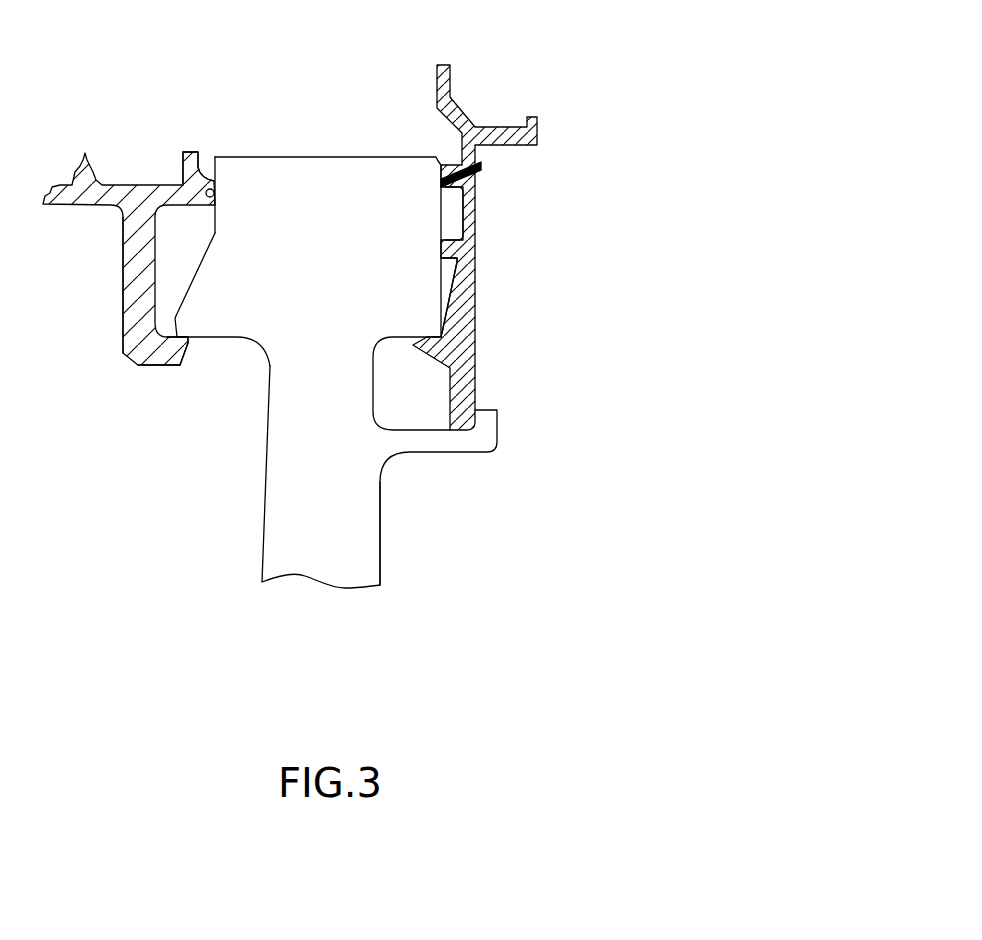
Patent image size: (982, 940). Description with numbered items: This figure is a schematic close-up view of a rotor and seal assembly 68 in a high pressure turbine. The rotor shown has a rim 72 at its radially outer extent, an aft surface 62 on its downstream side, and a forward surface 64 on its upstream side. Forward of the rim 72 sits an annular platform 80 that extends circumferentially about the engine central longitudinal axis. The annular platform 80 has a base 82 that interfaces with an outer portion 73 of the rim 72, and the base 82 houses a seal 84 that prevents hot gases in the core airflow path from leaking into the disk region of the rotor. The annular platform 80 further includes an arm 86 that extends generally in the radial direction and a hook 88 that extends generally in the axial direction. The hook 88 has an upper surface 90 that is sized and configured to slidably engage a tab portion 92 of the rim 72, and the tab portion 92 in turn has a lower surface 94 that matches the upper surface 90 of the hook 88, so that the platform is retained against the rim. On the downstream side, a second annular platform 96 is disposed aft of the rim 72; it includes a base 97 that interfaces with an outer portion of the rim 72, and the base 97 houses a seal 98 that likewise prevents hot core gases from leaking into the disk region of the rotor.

The aft surface 62 is at (381, 546).
The forward surface 64 is at (271, 483).
The rotor and seal assembly 68 is at (566, 54).
The rim 72 is at (393, 170).
The outer portion 73 is at (218, 178).
The annular platform 80 is at (137, 268).
The base 82 is at (193, 150).
The seal 84 is at (212, 196).
The arm 86 is at (126, 311).
The hook 88 is at (148, 366).
The upper surface 90 is at (188, 342).
The tab portion 92 is at (222, 326).
The lower surface 94 is at (178, 322).
The second annular platform 96 is at (468, 298).
The base 97 is at (468, 178).
The seal 98 is at (433, 161).